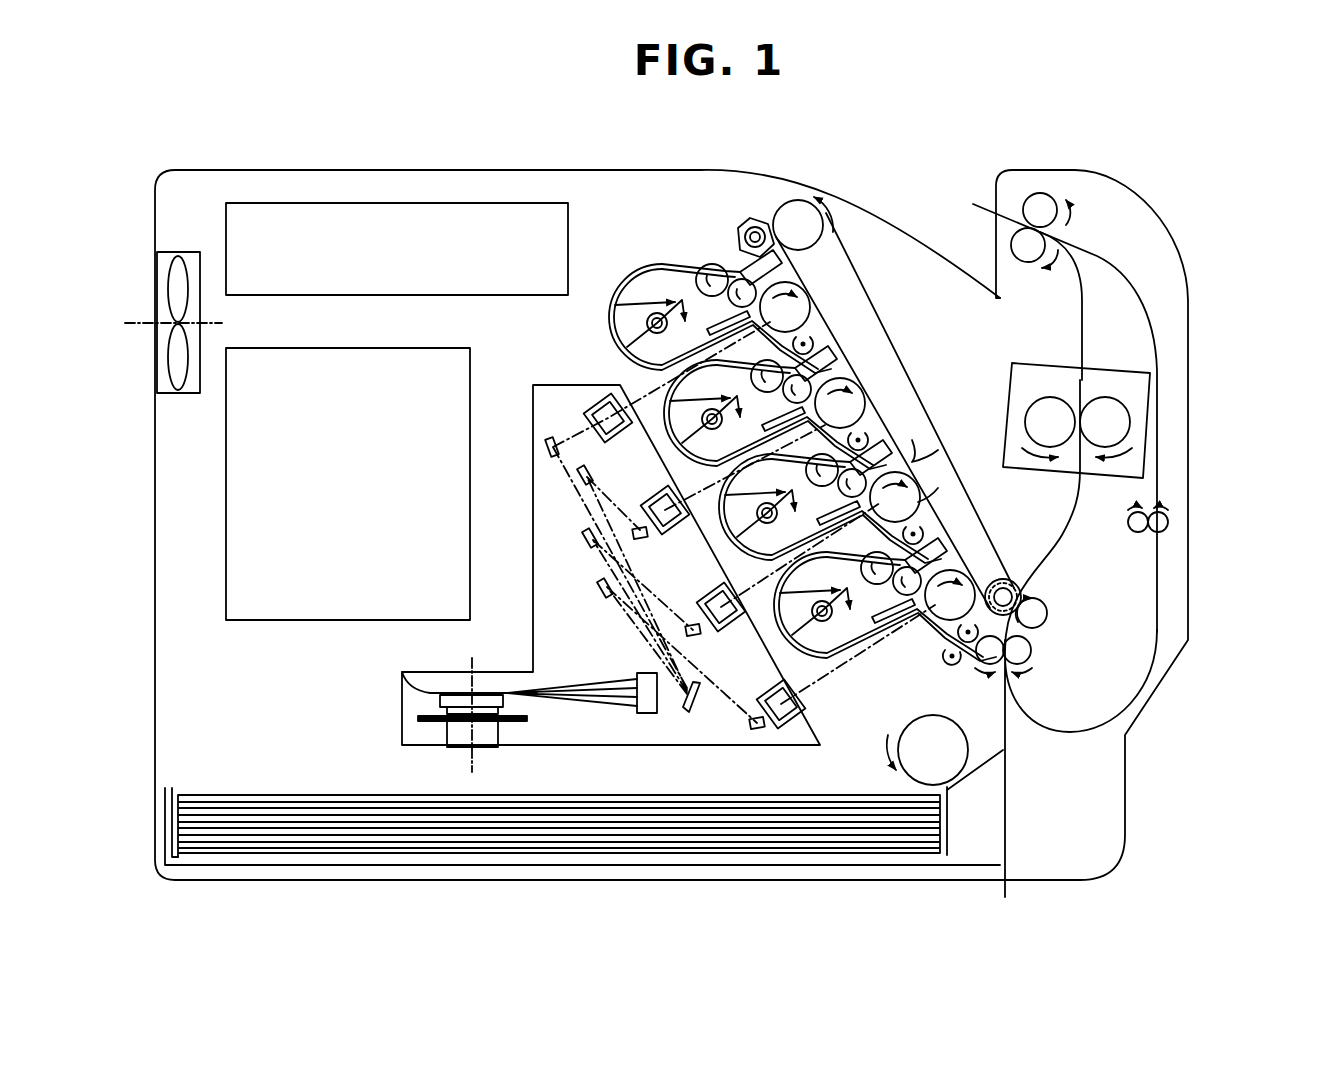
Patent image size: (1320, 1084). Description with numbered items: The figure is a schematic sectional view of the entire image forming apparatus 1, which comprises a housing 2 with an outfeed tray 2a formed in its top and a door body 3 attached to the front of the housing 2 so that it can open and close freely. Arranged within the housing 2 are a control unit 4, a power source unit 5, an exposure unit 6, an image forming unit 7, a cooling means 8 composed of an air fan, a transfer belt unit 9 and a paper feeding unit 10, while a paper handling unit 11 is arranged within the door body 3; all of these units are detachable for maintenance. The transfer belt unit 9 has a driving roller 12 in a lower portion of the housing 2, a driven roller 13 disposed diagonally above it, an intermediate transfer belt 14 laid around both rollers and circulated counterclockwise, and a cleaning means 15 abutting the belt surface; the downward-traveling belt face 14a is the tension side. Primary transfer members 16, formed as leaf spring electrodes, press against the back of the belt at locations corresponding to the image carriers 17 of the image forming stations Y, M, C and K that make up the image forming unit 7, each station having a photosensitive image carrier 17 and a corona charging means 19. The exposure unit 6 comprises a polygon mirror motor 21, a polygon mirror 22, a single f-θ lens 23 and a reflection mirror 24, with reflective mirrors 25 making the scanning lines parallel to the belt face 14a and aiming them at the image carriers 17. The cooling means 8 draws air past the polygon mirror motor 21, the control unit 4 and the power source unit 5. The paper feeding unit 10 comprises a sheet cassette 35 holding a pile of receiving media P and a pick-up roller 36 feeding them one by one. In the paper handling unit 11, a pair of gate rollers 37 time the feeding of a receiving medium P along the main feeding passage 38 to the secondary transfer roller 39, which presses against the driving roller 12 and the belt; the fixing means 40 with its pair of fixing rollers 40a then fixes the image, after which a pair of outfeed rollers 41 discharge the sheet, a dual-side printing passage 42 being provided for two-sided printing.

The image forming apparatus 1 is at (1160, 183).
The housing 2 is at (671, 545).
The outfeed tray 2a is at (892, 213).
The door body 3 is at (1128, 493).
The control unit 4 is at (392, 263).
The power source unit 5 is at (337, 498).
The exposure unit 6 is at (528, 380).
The image forming unit 7 is at (762, 425).
The cooling means 8 is at (182, 393).
The transfer belt unit 9 is at (837, 367).
The paper feeding unit 10 is at (584, 809).
The paper handling unit 11 is at (1148, 303).
The driving roller 12 is at (1000, 578).
The driven roller 13 is at (793, 212).
The intermediate transfer belt 14 is at (895, 410).
The belt face 14a is at (835, 317).
The cleaning means 15 is at (742, 229).
The primary transfer members 16 is at (918, 452).
The image carrier 17 is at (925, 500).
The charging means 19 is at (952, 655).
The polygon mirror motor 21 is at (447, 732).
The polygon mirror 22 is at (402, 672).
The f-θ lens 23 is at (640, 680).
The reflection mirror 24 is at (697, 702).
The reflective mirrors 25 is at (586, 542).
The sheet cassette 35 is at (790, 866).
The pick-up roller 36 is at (922, 738).
The gate rollers 37 is at (1035, 655).
The main feeding passage 38 is at (1046, 562).
The secondary transfer roller 39 is at (1042, 616).
The fixing means 40 is at (1123, 384).
The fixing rollers 40a is at (1040, 393).
The outfeed rollers 41 is at (1050, 196).
The dual-side printing passage 42 is at (1162, 431).
The image forming station Y is at (605, 312).
The image forming station M is at (677, 463).
The image forming station C is at (720, 565).
The image forming station K is at (785, 655).
The receiving media P is at (612, 842).